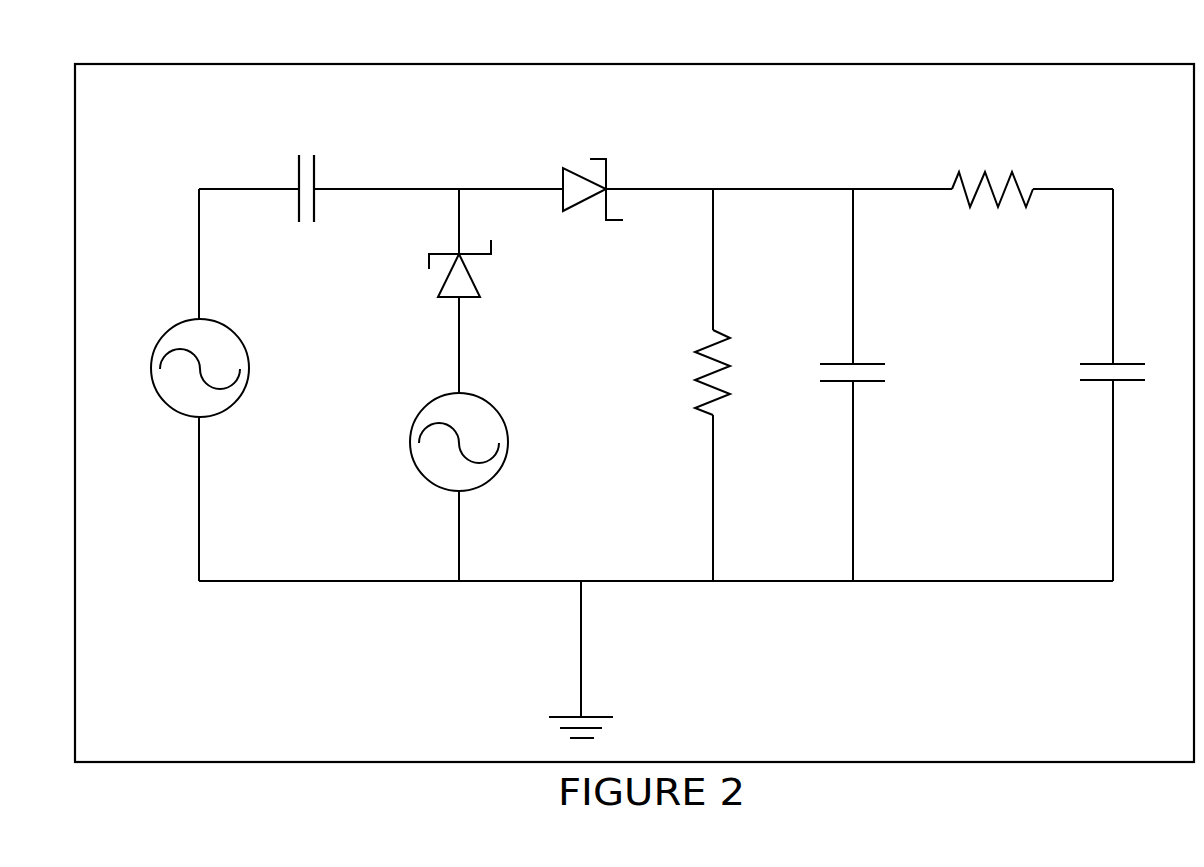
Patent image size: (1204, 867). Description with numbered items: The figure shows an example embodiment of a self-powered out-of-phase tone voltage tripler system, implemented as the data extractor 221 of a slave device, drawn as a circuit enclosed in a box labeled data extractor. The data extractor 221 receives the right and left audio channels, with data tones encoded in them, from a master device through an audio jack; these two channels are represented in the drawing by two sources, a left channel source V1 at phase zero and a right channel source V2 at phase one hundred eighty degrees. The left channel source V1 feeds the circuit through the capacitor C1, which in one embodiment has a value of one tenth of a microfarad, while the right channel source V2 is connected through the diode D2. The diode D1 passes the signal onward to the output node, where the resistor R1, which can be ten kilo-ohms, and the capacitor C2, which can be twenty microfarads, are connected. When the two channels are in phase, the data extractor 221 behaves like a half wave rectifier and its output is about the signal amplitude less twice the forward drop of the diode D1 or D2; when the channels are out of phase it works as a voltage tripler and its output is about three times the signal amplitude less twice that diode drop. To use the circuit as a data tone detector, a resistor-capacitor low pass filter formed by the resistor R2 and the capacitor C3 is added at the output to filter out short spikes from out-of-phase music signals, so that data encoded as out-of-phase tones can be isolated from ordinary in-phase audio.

The data extractor 221 is at (634, 393).
The capacitor C1 is at (308, 176).
The diode D1 is at (593, 178).
The diode D2 is at (472, 268).
The left channel voltage source (phase 0) V1 is at (170, 388).
The right channel voltage source (phase 180) V2 is at (418, 470).
The resistor R1 is at (725, 372).
The capacitor C2 is at (872, 380).
The resistor R2 is at (992, 178).
The capacitor C3 is at (1128, 380).